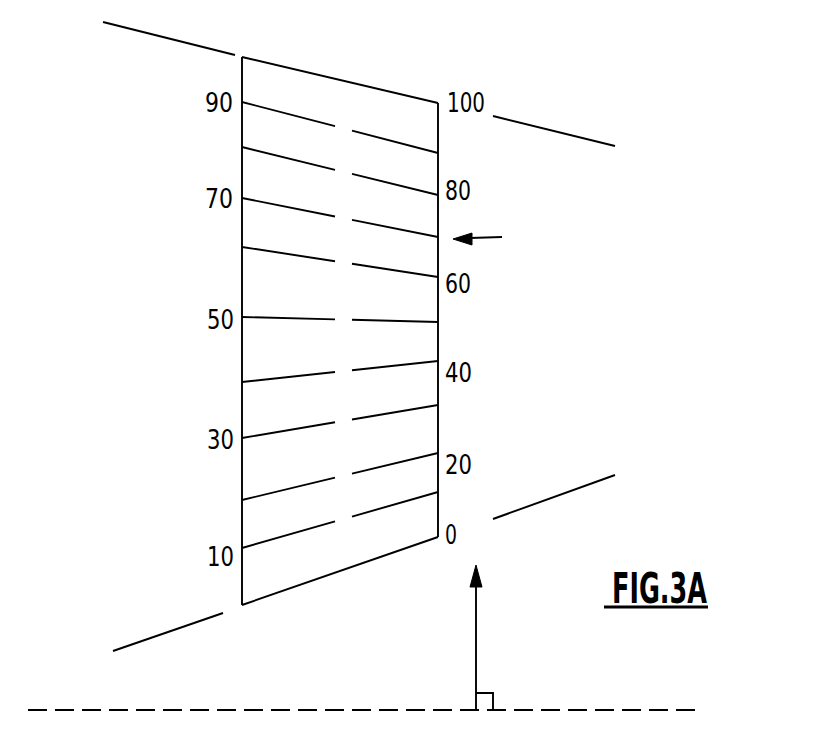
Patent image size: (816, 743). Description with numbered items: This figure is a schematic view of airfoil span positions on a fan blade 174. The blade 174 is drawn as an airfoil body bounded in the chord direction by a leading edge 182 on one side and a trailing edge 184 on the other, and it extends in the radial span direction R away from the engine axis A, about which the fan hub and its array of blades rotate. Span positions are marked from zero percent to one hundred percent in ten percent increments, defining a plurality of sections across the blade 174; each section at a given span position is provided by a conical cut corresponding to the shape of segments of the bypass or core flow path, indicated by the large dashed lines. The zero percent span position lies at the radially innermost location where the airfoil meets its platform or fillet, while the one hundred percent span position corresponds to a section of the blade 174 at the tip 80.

The tip 80 is at (338, 78).
The leading edge 182 is at (242, 268).
The trailing edge 184 is at (438, 307).
The fan blade 174 is at (502, 237).
The engine axis A is at (282, 710).
The radial span direction R is at (476, 645).